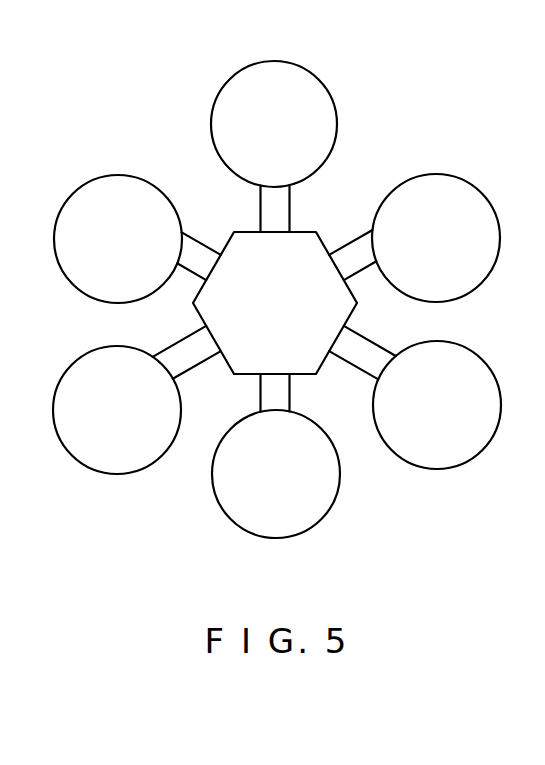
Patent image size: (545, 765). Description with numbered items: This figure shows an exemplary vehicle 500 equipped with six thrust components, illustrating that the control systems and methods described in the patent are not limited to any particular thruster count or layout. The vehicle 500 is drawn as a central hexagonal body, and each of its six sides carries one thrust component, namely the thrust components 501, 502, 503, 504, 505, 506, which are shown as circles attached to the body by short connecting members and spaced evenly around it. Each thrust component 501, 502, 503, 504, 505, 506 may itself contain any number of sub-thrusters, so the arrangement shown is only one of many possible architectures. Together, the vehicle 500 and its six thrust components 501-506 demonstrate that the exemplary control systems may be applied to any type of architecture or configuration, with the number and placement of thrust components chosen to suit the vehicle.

The vehicle 500 is at (170, 100).
The thrust component 501 is at (274, 146).
The thrust component 502 is at (414, 238).
The thrust component 503 is at (415, 397).
The thrust component 504 is at (276, 456).
The thrust component 505 is at (137, 400).
The thrust component 506 is at (137, 239).